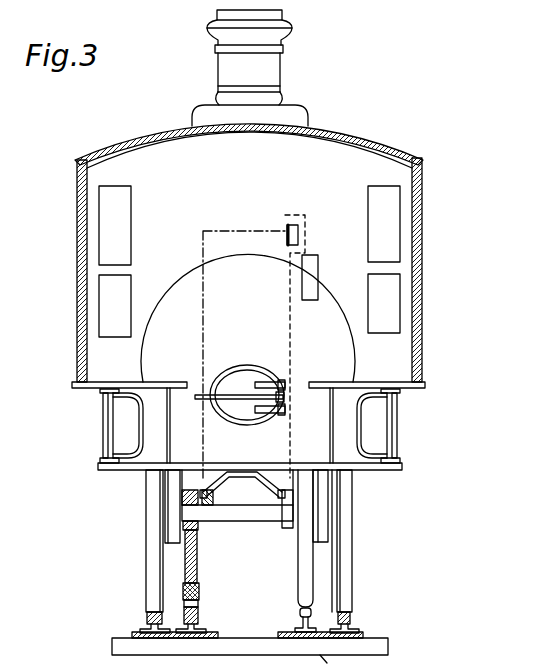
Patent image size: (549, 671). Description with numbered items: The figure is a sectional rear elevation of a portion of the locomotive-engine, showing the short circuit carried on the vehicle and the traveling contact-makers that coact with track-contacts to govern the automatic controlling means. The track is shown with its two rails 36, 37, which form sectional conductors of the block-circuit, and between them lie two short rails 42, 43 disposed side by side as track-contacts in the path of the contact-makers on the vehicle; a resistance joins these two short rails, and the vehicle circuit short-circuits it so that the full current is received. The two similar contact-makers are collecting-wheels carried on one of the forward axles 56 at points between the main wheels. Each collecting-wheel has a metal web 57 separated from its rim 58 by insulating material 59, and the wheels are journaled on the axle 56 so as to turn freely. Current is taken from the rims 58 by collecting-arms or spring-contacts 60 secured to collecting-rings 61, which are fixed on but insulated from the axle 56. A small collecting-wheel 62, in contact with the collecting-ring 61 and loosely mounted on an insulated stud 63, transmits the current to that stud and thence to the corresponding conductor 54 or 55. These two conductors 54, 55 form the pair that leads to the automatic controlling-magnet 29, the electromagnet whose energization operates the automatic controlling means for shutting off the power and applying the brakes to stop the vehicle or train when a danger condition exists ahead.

The automatic controlling-magnet 29 is at (287, 233).
The rail 36 is at (352, 619).
The rail 37 is at (146, 617).
The short rail 42 is at (300, 613).
The short rail 43 is at (198, 615).
The conductor 54 is at (308, 293).
The conductor 55 is at (254, 346).
The axle 56 is at (243, 519).
The web 57 is at (199, 560).
The rim 58 is at (199, 602).
The insulating material 59 is at (199, 592).
The collecting-arm 60 is at (243, 484).
The collecting-ring 61 is at (199, 527).
The small collecting-wheel 62 is at (182, 494).
The insulated stud 63 is at (214, 497).